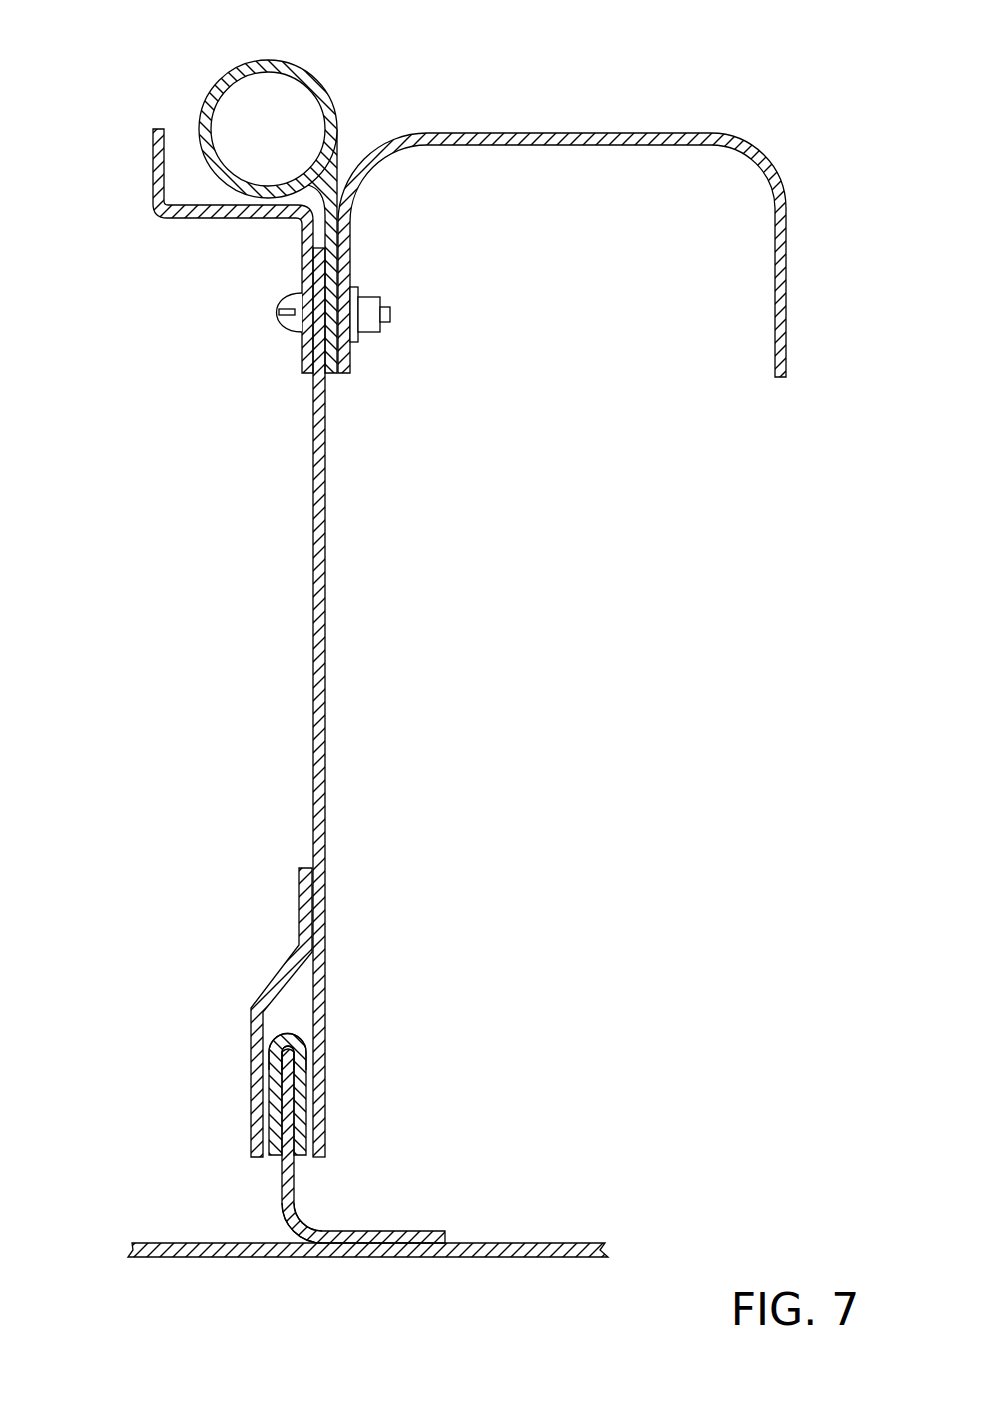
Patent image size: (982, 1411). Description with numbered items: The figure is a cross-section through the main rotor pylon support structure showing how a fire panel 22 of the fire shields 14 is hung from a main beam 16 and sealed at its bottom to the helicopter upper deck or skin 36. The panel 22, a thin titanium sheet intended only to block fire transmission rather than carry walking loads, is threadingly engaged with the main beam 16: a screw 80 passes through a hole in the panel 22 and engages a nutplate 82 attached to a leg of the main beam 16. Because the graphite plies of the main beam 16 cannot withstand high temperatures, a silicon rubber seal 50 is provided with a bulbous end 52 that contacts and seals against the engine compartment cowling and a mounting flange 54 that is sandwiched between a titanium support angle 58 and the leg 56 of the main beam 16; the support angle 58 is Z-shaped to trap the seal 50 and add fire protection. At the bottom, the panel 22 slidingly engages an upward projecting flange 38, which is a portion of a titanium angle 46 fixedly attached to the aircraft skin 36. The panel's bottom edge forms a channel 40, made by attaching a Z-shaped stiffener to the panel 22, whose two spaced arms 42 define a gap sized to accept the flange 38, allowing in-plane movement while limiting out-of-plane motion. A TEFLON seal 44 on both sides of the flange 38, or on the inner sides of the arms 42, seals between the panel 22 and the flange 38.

The fire shields 14 is at (306, 702).
The main beam 16 is at (585, 132).
The fire panel 22 is at (325, 633).
The upper deck or skin 36 is at (153, 1243).
The upward projecting flange 38 is at (287, 1182).
The channel 40 is at (235, 1030).
The spaced arms 42 is at (268, 1075).
The TEFLON seal 44 is at (300, 1058).
The angle 46 is at (312, 1208).
The seal 50 is at (298, 193).
The bulbous end 52 is at (206, 133).
The mounting flange 54 is at (333, 272).
The leg 56 is at (348, 354).
The support angle 58 is at (207, 220).
The screw 80 is at (283, 331).
The nutplate 82 is at (357, 336).